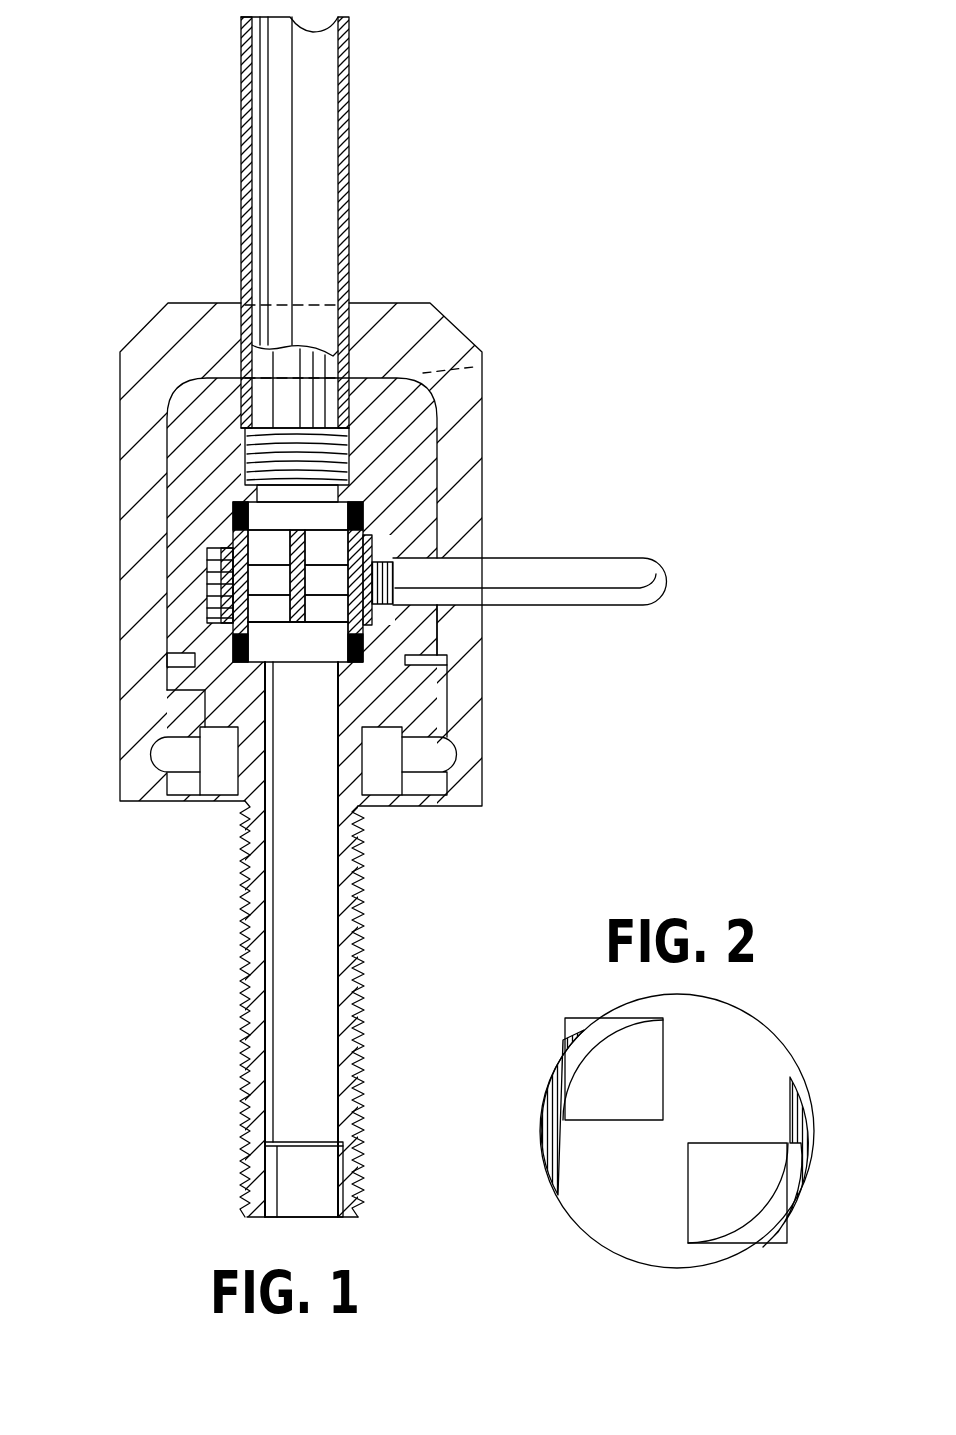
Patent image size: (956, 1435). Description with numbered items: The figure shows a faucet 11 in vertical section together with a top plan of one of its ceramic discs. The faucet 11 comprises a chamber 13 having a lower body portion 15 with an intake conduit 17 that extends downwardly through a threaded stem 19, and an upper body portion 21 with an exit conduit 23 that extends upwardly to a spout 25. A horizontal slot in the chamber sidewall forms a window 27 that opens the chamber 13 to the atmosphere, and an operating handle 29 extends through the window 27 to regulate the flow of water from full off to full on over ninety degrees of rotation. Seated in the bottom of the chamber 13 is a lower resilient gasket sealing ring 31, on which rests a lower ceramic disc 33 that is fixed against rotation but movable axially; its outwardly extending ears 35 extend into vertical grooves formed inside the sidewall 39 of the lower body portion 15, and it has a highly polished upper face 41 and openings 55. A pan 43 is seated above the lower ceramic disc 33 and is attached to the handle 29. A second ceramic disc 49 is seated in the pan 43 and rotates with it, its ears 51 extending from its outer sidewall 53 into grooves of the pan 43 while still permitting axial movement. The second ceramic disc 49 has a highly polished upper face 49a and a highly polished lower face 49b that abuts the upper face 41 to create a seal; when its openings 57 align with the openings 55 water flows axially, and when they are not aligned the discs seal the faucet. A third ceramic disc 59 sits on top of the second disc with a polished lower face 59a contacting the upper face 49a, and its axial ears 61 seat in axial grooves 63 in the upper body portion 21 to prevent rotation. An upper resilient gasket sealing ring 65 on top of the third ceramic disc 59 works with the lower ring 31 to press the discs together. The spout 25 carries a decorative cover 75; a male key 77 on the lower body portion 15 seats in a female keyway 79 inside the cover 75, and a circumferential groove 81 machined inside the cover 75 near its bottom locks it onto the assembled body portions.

In FIG. 1, the faucet 11 is at (220, 832).
In FIG. 1, the chamber 13 is at (340, 490).
In FIG. 1, the lower body portion 15 is at (437, 615).
In FIG. 1, the intake conduit 17 is at (307, 872).
In FIG. 1, the threaded stem 19 is at (330, 962).
In FIG. 1, the upper body portion 21 is at (420, 440).
In FIG. 1, the exit conduit 23 is at (482, 370).
In FIG. 1, the spout 25 is at (327, 118).
In FIG. 1, the window 27 is at (395, 558).
In FIG. 1, the operating handle 29 is at (640, 570).
In FIG. 1, the lower resilient gasket sealing ring 31 is at (325, 665).
In FIG. 1, the lower ceramic disc 33 is at (258, 618).
In FIG. 2, the lower ceramic disc 33 is at (733, 1065).
In FIG. 1, the ears 35 is at (233, 607).
In FIG. 2, the ears 35 is at (578, 1023).
In FIG. 1, the sidewall 39 is at (298, 665).
In FIG. 1, the upper face 41 is at (283, 596).
In FIG. 2, the upper face 41 is at (753, 1093).
In FIG. 1, the pan 43 is at (210, 580).
In FIG. 1, the second ceramic disc 49 is at (363, 545).
In FIG. 1, the upper face 49a is at (290, 498).
In FIG. 1, the lower face 49b is at (325, 637).
In FIG. 1, the ears 51 is at (213, 585).
In FIG. 1, the outer sidewall 53 is at (230, 600).
In FIG. 1, the openings 55 is at (305, 620).
In FIG. 2, the openings 55 is at (603, 1097).
In FIG. 1, the openings 57 is at (284, 565).
In FIG. 1, the third ceramic disc 59 is at (225, 540).
In FIG. 1, the lower face 59a is at (343, 537).
In FIG. 1, the axial ears 61 is at (233, 548).
In FIG. 1, the axial grooves 63 is at (233, 560).
In FIG. 1, the upper resilient gasket sealing ring 65 is at (233, 525).
In FIG. 1, the decorative cover 75 is at (463, 400).
In FIG. 1, the male key 77 is at (430, 685).
In FIG. 1, the female keyway 79 is at (437, 655).
In FIG. 1, the circumferential groove 81 is at (180, 800).